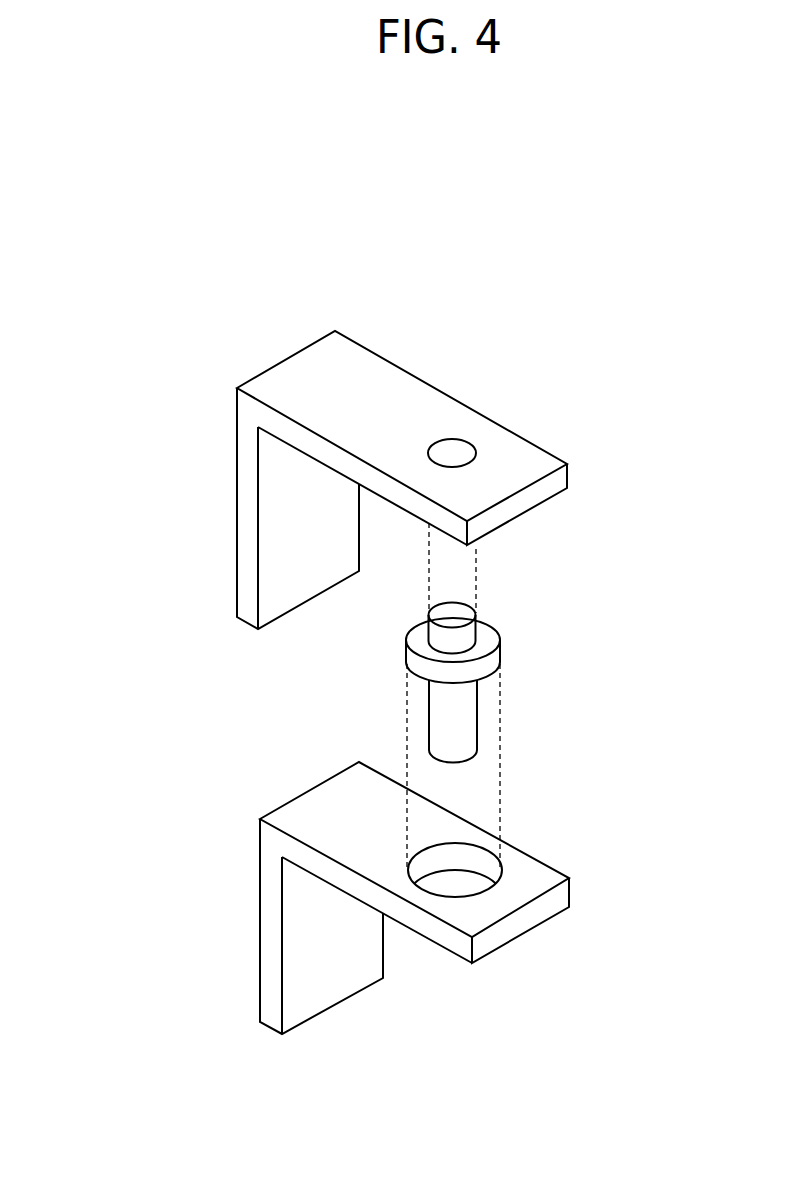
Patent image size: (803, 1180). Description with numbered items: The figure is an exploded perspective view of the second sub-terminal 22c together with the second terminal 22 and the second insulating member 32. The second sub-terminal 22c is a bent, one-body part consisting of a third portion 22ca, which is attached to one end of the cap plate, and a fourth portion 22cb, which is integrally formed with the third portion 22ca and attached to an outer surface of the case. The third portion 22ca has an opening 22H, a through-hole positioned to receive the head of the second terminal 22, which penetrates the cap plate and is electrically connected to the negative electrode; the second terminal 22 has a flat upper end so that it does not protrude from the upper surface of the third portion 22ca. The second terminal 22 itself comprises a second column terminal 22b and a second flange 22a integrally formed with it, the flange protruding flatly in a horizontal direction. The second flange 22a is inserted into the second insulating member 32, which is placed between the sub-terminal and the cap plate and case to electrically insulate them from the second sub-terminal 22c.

The second terminal 22 is at (582, 658).
The second flange 22a is at (484, 668).
The second column terminal 22b is at (468, 713).
The second sub-terminal 22c is at (123, 332).
The third portion 22ca is at (353, 390).
The fourth portion 22cb is at (250, 474).
The opening 22H is at (453, 452).
The second insulating member 32 is at (530, 872).